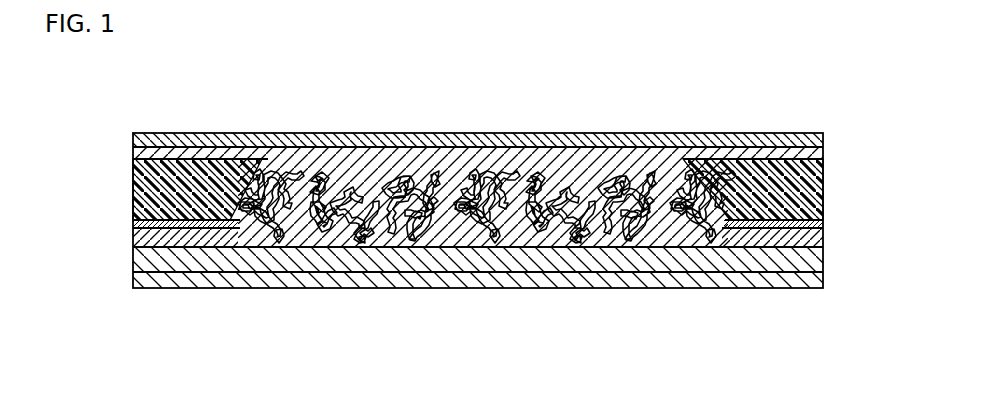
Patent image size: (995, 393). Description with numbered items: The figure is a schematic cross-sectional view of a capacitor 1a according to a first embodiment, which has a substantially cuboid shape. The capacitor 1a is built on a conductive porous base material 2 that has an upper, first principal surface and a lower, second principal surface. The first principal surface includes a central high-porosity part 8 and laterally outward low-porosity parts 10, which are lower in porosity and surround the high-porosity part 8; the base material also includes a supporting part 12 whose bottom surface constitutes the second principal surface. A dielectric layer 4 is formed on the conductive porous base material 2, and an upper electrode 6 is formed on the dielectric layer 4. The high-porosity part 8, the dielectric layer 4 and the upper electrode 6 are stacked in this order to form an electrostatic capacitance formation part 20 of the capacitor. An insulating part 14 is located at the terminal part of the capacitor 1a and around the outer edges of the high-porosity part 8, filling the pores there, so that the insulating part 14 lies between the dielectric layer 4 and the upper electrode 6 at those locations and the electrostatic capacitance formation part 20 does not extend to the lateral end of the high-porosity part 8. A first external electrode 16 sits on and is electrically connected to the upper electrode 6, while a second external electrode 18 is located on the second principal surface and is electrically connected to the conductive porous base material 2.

The capacitor 1a is at (110, 134).
The conductive porous base material 2 is at (875, 205).
The dielectric layer 4 is at (380, 188).
The upper electrode 6 is at (448, 172).
The high-porosity part 8 is at (823, 220).
The low-porosity part 10 is at (823, 237).
The supporting part 12 is at (823, 262).
The insulating part 14 is at (823, 168).
The first external electrode 16 is at (528, 143).
The second external electrode 18 is at (823, 283).
The electrostatic capacitance formation part 20 is at (270, 289).